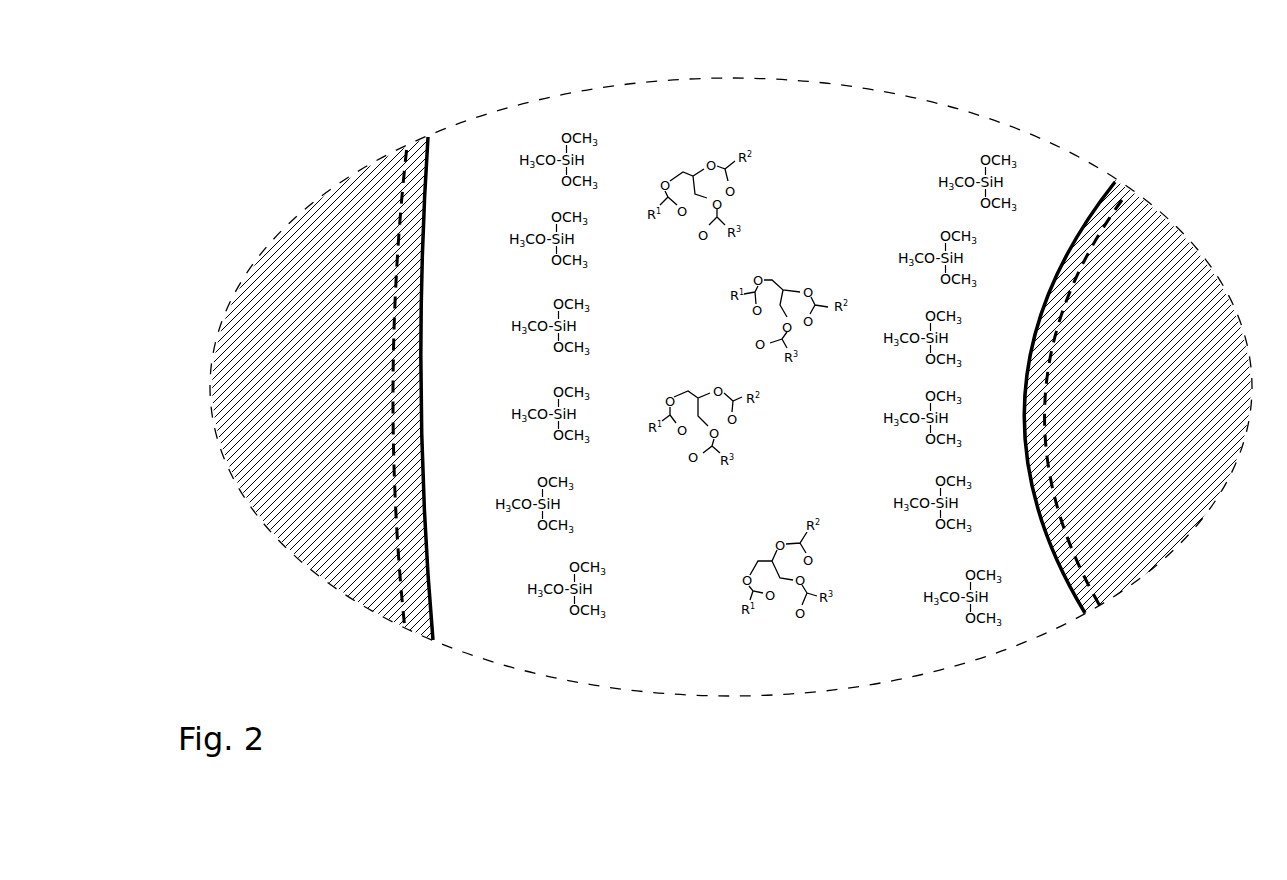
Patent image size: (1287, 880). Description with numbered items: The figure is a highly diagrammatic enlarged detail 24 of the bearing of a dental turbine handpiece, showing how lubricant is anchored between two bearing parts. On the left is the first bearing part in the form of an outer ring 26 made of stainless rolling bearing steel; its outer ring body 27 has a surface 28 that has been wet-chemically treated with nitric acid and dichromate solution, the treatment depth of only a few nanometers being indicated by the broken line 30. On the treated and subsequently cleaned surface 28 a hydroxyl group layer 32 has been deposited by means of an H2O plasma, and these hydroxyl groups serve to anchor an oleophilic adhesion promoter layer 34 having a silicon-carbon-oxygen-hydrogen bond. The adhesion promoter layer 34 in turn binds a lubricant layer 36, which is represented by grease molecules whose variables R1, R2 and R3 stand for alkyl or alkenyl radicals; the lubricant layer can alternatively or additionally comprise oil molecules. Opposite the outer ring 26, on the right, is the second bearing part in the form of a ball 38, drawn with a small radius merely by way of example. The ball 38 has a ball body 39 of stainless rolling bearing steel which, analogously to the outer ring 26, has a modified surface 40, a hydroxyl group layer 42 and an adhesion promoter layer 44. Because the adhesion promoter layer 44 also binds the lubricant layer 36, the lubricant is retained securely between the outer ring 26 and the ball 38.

The enlarged detail 24 is at (270, 108).
The outer ring 26 is at (322, 378).
The outer ring body 27 is at (348, 206).
The surface 28 is at (425, 156).
The broken line 30 is at (399, 192).
The hydroxyl group layer 32 is at (455, 149).
The adhesion promoter layer 34 is at (536, 128).
The lubricant layer 36 is at (662, 119).
The ball 38 is at (1137, 436).
The ball body 39 is at (1157, 234).
The modified surface 40 is at (1091, 607).
The hydroxyl group layer 42 is at (1066, 627).
The adhesion promoter layer 44 is at (999, 642).